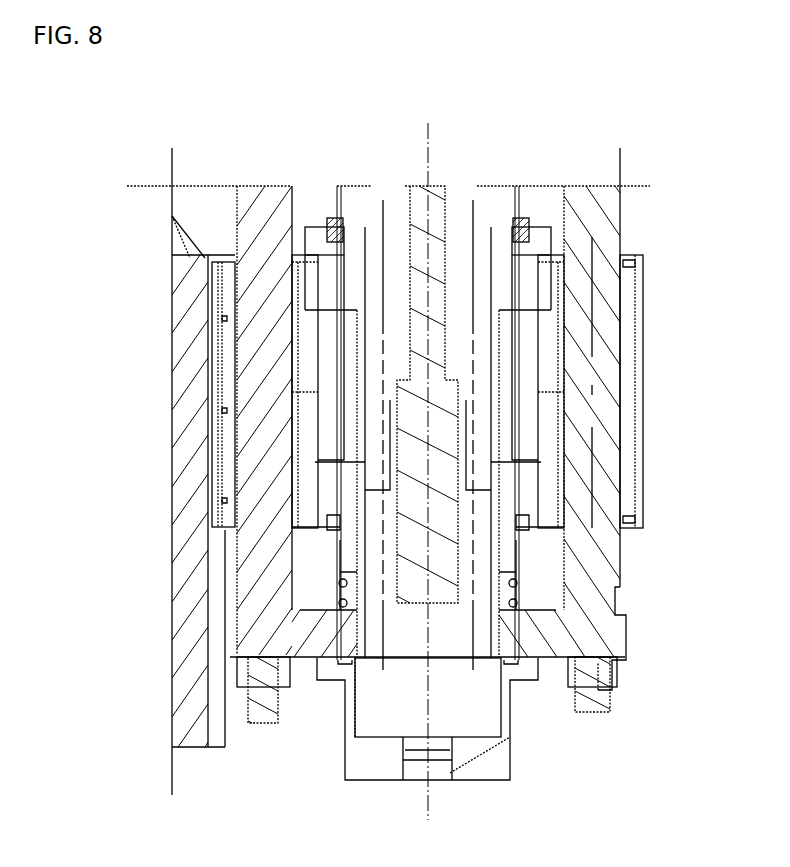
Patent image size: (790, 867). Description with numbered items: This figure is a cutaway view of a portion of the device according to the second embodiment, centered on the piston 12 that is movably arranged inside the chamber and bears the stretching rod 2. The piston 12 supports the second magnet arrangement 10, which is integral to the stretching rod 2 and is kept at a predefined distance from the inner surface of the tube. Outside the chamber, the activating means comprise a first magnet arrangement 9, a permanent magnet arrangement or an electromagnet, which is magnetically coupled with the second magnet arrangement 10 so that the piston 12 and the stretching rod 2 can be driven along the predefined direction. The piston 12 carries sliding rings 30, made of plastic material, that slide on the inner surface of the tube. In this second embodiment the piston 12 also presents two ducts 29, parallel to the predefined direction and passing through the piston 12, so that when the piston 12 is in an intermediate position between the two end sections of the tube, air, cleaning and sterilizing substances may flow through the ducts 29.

The stretching rod 2 is at (435, 207).
The piston 12 is at (397, 226).
The sliding rings 30 is at (347, 263).
The duct 29 is at (378, 308).
The second magnet arrangement 10 is at (353, 350).
The first magnet arrangement 9 is at (327, 417).